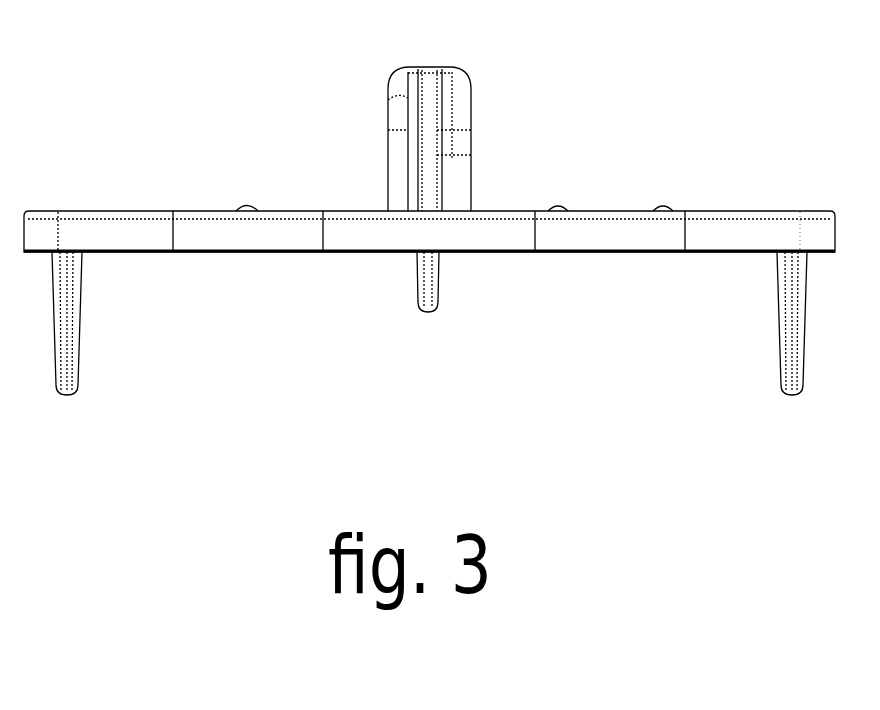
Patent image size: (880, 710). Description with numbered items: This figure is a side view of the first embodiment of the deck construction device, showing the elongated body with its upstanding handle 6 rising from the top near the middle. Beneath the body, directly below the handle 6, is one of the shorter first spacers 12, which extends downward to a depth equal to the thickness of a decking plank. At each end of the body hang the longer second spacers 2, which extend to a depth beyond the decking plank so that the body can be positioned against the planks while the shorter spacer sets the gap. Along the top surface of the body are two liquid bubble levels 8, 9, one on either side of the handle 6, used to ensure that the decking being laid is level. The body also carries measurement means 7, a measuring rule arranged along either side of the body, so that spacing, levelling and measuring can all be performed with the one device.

The second spacers 2 is at (444, 323).
The handle 6 is at (429, 110).
The measurement means 7 is at (429, 254).
The liquid bubble level 8 is at (248, 182).
The liquid bubble level 9 is at (610, 188).
The first spacers 12 is at (428, 307).